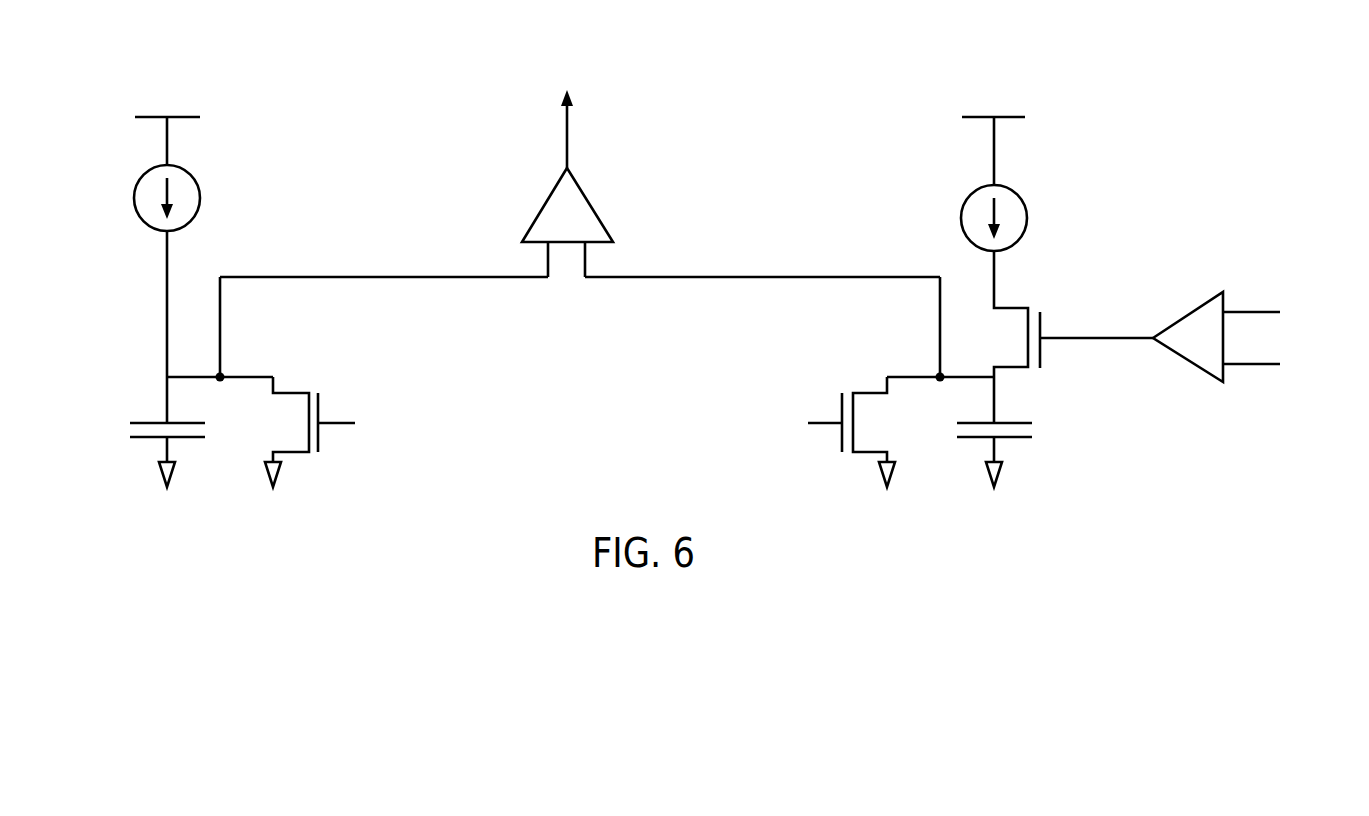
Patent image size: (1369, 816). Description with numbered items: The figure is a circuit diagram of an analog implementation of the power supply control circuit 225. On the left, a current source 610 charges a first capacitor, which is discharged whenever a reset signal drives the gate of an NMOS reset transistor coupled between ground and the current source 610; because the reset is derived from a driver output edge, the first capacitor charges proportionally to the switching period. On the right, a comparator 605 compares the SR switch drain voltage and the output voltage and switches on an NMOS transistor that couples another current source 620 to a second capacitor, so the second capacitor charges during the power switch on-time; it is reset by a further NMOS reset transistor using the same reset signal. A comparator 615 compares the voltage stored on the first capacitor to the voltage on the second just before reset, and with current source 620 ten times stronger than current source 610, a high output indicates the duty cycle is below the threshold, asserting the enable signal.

The power supply control circuit 225 is at (778, 32).
The comparator 605 is at (1183, 362).
The current source 610 is at (200, 198).
The comparator 615 is at (543, 205).
The current source 620 is at (961, 218).